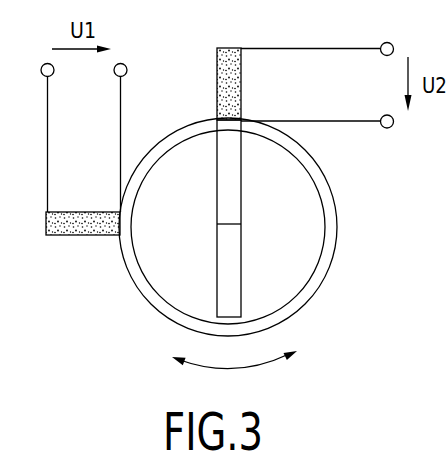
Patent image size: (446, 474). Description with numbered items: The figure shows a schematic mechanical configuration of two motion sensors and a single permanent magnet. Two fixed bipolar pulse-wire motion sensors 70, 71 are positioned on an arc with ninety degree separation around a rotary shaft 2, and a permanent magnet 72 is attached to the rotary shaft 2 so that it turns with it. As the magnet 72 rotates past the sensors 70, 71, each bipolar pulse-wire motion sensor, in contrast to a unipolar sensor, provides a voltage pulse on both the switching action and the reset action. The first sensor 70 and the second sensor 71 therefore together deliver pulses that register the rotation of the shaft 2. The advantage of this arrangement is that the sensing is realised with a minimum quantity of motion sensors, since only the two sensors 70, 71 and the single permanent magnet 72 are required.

The rotary shaft 2 is at (293, 182).
The bipolar pulse-wire motion sensor 70 is at (72, 235).
The bipolar pulse-wire motion sensor 71 is at (217, 79).
The permanent magnet 72 is at (217, 183).